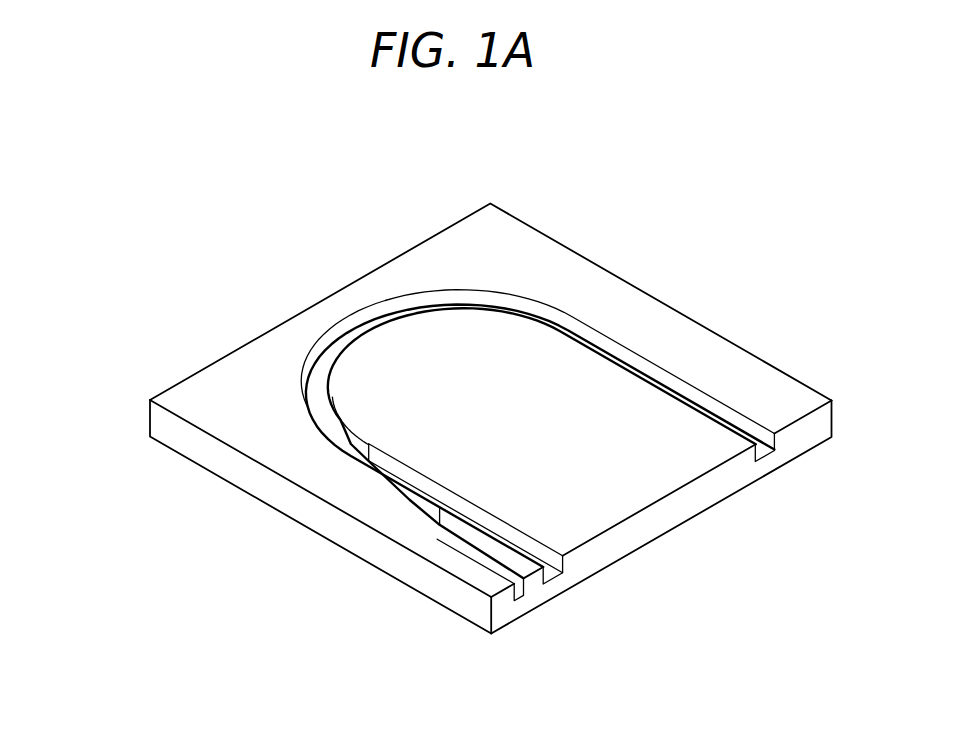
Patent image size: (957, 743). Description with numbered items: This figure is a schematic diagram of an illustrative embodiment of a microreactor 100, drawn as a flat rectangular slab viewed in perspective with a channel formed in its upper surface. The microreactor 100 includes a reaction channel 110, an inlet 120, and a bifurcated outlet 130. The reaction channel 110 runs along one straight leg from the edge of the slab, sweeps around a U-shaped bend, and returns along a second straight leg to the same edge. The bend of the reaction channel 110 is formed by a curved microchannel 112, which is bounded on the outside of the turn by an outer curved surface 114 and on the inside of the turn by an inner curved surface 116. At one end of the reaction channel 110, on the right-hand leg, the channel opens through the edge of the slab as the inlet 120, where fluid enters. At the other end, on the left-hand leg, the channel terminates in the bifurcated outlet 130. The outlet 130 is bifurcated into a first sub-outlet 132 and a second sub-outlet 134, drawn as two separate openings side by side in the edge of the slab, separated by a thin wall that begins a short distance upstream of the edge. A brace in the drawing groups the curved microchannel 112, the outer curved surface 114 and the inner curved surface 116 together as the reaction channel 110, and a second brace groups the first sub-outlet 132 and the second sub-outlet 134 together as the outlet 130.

The microreactor 100 is at (508, 166).
The reaction channel 110 is at (122, 485).
The curved microchannel 112 is at (318, 397).
The outer curved surface 114 is at (354, 337).
The inner curved surface 116 is at (354, 459).
The inlet 120 is at (766, 451).
The bifurcated outlet 130 is at (633, 633).
The first sub-outlet 132 is at (552, 572).
The second sub-outlet 134 is at (517, 594).